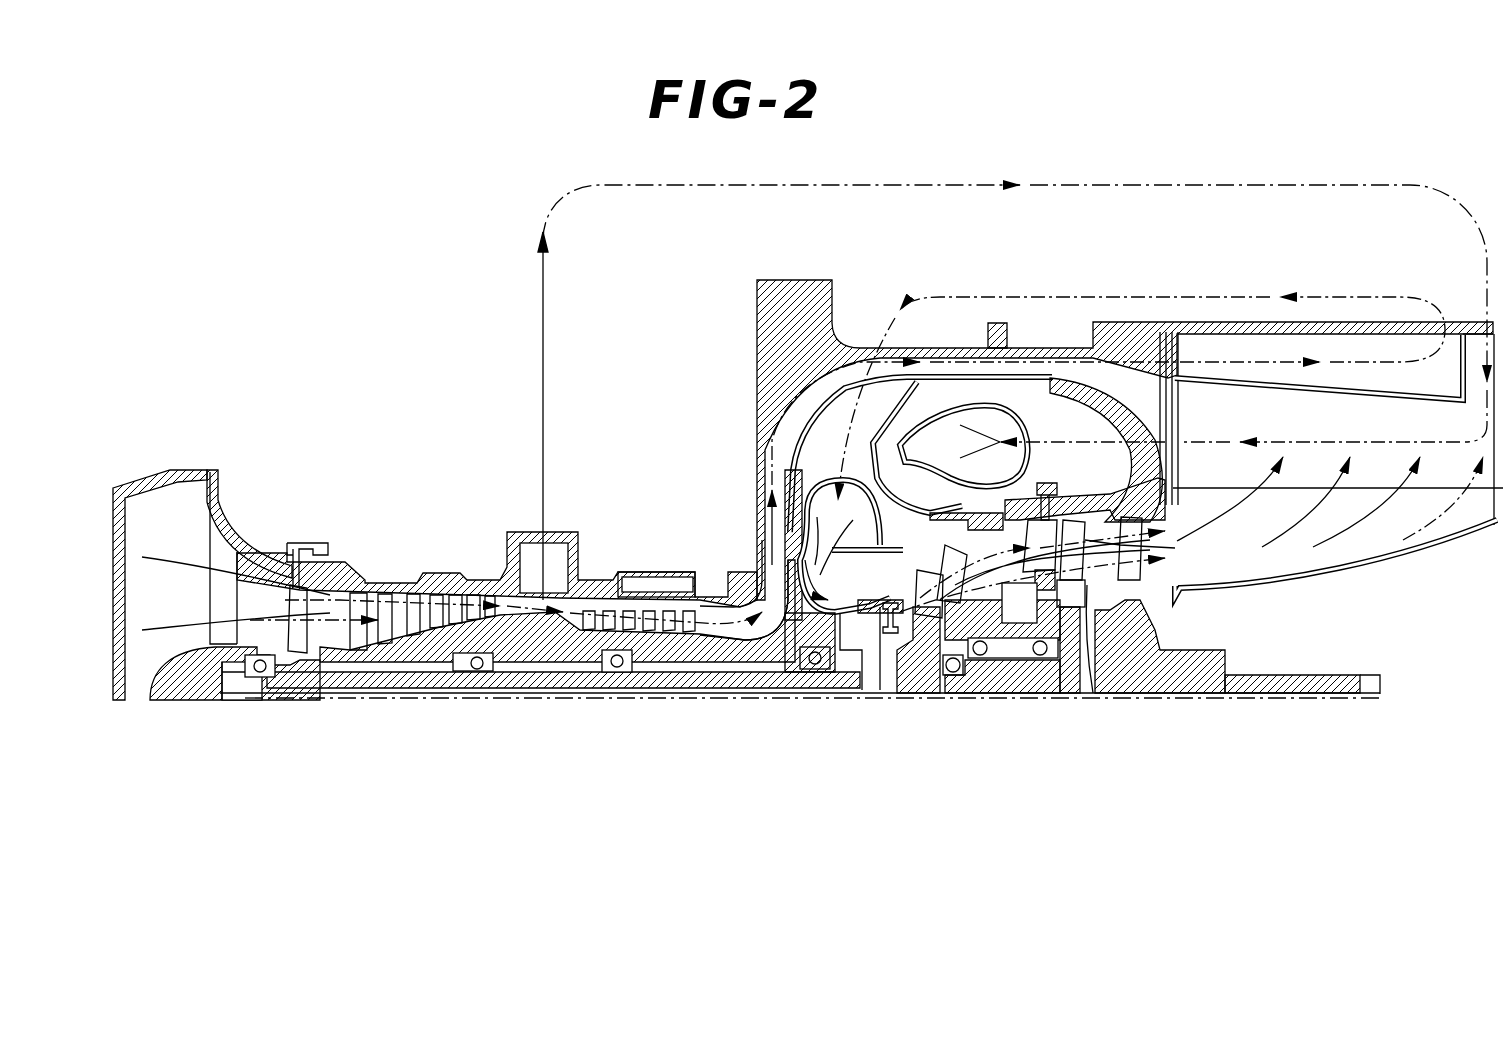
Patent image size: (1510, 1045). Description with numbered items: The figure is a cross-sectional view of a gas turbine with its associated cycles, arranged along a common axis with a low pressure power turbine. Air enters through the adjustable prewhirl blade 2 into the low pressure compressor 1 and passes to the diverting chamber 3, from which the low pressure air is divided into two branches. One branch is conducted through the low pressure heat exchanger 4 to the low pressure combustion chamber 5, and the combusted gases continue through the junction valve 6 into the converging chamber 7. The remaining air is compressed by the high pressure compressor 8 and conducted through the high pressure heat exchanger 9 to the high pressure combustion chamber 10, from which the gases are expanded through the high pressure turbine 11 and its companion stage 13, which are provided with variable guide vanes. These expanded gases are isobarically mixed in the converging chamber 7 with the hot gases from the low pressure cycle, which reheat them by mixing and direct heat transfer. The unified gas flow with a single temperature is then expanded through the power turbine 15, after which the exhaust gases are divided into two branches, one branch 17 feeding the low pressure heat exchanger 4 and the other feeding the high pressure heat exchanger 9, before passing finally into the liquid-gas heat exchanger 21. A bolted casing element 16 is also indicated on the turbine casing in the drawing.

The low pressure compressor 1 is at (380, 634).
The adjustable prewhirl blade 2 is at (293, 642).
The diverting chamber 3 is at (538, 616).
The low pressure heat exchanger 4 is at (1370, 467).
The low pressure combustion chamber 5 is at (993, 430).
The junction valve 6 is at (943, 530).
The converging chamber 7 is at (978, 548).
The high pressure compressor 8 is at (655, 613).
The high pressure heat exchanger 9 is at (1443, 382).
The high pressure combustion chamber 10 is at (830, 500).
The high pressure turbine 11 is at (868, 652).
The high pressure turbine 13 is at (928, 673).
The power turbine 15 is at (1100, 653).
The turbine casing bolt 16 is at (1040, 500).
The exhaust gas branch 17 is at (1253, 523).
The liquid-gas heat exchanger 21 is at (1462, 330).